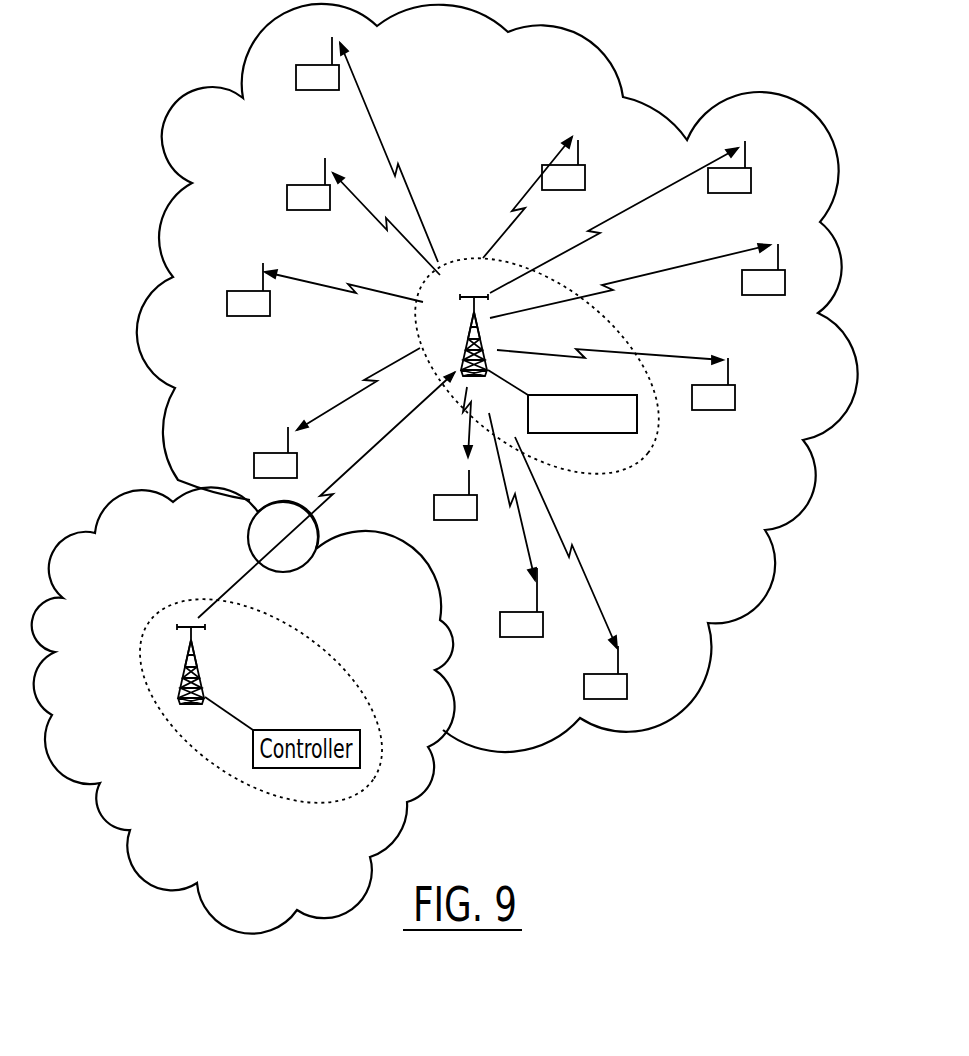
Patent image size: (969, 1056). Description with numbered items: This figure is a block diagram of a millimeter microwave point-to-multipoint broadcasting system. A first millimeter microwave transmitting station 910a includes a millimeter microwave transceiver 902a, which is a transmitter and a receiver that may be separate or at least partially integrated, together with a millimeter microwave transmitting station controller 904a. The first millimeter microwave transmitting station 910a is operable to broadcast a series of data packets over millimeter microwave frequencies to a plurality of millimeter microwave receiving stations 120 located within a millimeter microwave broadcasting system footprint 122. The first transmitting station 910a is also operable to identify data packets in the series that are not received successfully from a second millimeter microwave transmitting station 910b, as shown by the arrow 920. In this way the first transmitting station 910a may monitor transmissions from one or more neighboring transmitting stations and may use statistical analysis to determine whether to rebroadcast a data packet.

The millimeter microwave receiving stations 120 is at (315, 63).
The millimeter microwave broadcasting system footprint 122 is at (655, 100).
The millimeter microwave transceiver 902a is at (462, 353).
The millimeter microwave transmitting station controller 904a is at (590, 395).
The first millimeter microwave transmitting station 910a is at (413, 322).
The second millimeter microwave transmitting station 910b is at (137, 640).
The arrow 920 is at (243, 575).